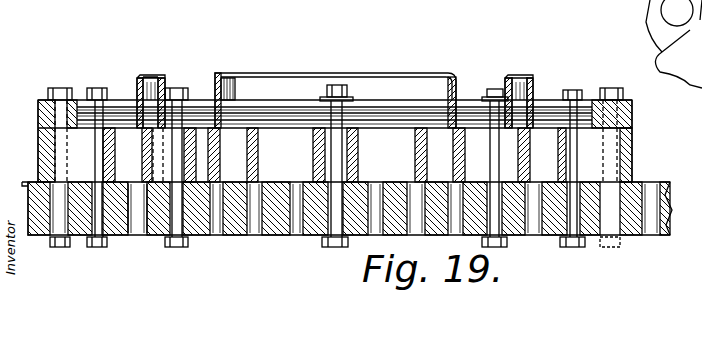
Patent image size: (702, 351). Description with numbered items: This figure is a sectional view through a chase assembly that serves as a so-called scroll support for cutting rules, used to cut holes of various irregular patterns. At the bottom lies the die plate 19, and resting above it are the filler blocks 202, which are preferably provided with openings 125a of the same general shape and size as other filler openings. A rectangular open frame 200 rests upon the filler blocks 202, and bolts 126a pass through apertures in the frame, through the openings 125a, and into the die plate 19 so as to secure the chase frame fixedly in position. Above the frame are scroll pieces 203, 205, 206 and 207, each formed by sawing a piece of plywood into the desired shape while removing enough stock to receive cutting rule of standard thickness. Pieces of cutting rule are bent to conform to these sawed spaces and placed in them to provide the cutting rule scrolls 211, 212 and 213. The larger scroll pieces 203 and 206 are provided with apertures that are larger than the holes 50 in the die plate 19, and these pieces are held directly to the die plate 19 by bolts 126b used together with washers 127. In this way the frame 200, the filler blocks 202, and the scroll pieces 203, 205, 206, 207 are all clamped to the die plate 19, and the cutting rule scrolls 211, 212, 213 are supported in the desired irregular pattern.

The die plate 19 is at (230, 240).
The holes 50 is at (156, 237).
The rectangular open frame 200 is at (40, 108).
The openings 125a is at (66, 148).
The scroll piece 206 is at (388, 110).
The washers 127 is at (205, 113).
The filler blocks 202 is at (46, 166).
The cutting rule scroll 212 is at (292, 73).
The scroll piece 203 is at (231, 90).
The scroll piece 205 is at (138, 100).
The cutting rule scroll 213 is at (507, 77).
The bolts 126a is at (64, 87).
The bolts 126b is at (100, 87).
The cutting rule scroll 211 is at (150, 80).
The scroll piece 207 is at (545, 108).